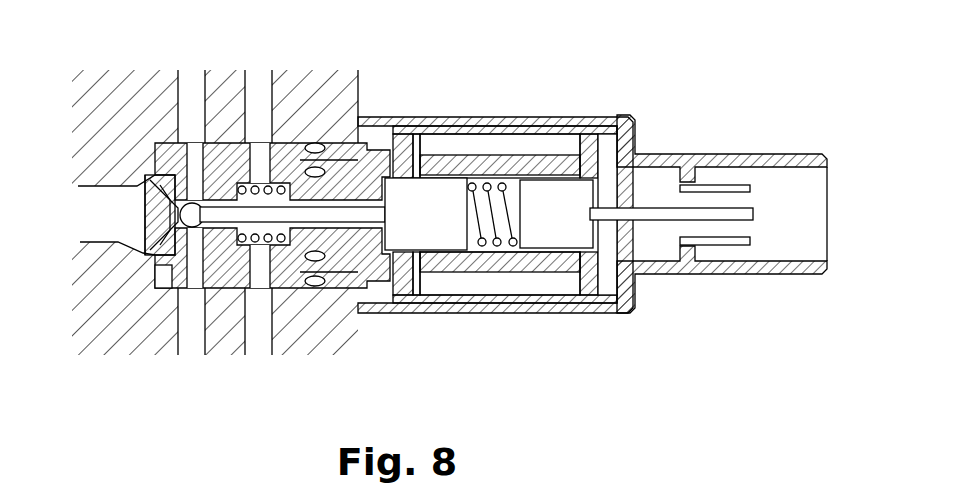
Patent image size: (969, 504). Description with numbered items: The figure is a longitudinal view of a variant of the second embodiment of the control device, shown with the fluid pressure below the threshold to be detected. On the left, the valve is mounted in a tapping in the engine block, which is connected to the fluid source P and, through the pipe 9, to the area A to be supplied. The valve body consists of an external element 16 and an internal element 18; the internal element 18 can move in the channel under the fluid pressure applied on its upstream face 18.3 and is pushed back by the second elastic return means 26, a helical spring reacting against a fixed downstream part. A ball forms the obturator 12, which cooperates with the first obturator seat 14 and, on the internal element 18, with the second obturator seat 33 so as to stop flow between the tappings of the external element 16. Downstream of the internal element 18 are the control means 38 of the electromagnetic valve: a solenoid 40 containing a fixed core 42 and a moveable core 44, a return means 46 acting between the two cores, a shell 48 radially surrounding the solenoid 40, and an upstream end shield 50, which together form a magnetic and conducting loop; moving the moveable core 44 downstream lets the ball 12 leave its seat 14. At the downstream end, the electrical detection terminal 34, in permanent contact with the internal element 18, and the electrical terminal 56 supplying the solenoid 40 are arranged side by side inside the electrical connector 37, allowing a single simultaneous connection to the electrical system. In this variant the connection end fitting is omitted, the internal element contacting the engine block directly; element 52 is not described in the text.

The pipe 9 is at (360, 128).
The obturator 12 is at (172, 203).
The obturator seat 14 is at (163, 270).
The external element 16 is at (237, 267).
The internal element 18 is at (182, 265).
The upstream face 18.3 is at (143, 253).
The second elastic return means 26 is at (290, 267).
The second obturator seat 33 is at (232, 160).
The electrical detection terminal 34 is at (662, 220).
The electrical connector 37 is at (722, 189).
The control means 38 is at (486, 112).
The solenoid 40 is at (560, 152).
The fixed core 42 is at (540, 198).
The moveable core 44 is at (440, 193).
The return means 46 is at (503, 246).
The shell 48 is at (472, 300).
The upstream end shield 50 is at (400, 284).
The end plate 52 is at (605, 292).
The electrical terminal 56 is at (737, 188).